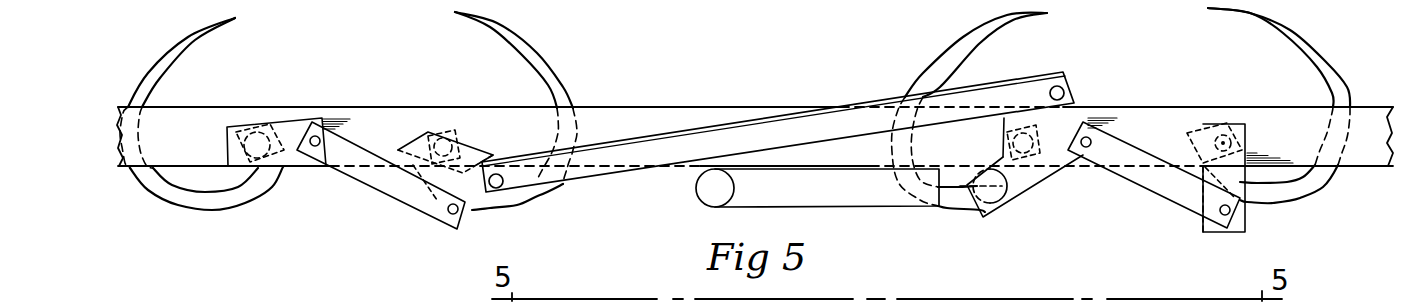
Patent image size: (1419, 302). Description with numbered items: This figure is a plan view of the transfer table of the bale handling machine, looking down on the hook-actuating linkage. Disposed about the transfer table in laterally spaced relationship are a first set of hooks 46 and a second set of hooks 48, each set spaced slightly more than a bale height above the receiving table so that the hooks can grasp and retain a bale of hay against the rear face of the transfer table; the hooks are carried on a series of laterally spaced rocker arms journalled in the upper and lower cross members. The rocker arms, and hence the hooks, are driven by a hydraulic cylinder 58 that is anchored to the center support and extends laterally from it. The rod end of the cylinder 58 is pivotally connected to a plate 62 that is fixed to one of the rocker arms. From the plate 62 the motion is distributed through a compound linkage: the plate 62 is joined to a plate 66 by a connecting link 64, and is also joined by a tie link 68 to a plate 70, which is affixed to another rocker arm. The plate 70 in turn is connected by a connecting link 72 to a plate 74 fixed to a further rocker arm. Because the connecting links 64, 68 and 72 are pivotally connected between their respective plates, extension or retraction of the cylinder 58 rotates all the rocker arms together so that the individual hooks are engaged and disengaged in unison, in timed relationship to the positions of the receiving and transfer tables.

The first set of hooks 46 is at (217, 61).
The second set of hooks 48 is at (1258, 67).
The hydraulic cylinder 58 is at (867, 192).
The plate 62 is at (1080, 157).
The connecting link 64 is at (1152, 178).
The plate 66 is at (1247, 228).
The tie link 68 is at (795, 108).
The plate 70 is at (492, 196).
The connecting link 72 is at (379, 172).
The plate 74 is at (284, 124).